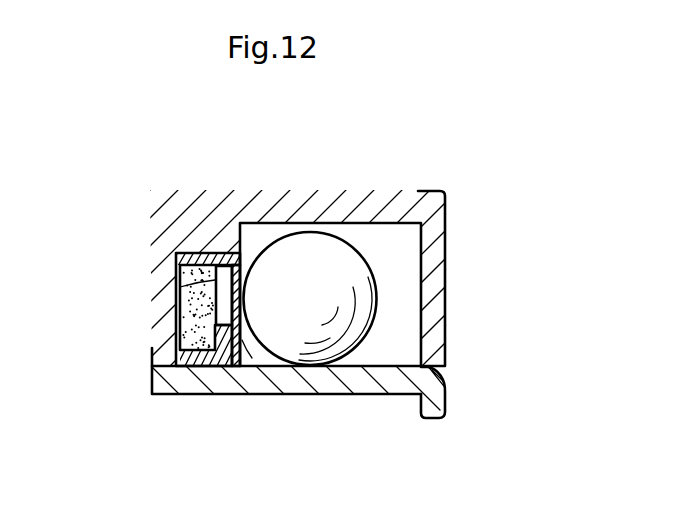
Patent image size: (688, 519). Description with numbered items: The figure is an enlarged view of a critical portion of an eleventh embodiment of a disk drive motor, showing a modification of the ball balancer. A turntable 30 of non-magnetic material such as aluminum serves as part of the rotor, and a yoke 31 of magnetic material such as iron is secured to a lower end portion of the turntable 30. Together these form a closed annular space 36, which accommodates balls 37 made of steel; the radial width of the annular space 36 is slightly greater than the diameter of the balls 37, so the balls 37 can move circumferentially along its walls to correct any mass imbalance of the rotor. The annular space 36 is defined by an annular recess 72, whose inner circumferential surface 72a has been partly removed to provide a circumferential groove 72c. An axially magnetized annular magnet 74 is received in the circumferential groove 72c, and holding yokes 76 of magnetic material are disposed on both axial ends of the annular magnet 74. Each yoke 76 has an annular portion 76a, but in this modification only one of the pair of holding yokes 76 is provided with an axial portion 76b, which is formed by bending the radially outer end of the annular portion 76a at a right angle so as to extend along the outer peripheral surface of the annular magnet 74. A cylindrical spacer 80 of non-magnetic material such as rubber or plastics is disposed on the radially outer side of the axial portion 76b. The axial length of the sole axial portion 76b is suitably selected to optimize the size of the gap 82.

The turntable 30 is at (428, 198).
The yoke 31 is at (447, 408).
The annular space 36 is at (402, 344).
The balls 37 is at (377, 298).
The annular recess 72 is at (406, 224).
The inner circumferential surface 72a is at (187, 253).
The circumferential groove 72c is at (172, 256).
The annular magnet 74 is at (180, 328).
The supporting yoke 76 is at (219, 312).
The annular portion 76a is at (222, 253).
The axial portion 76b is at (212, 364).
The cylindrical spacer 80 is at (249, 343).
The gap 82 is at (177, 289).